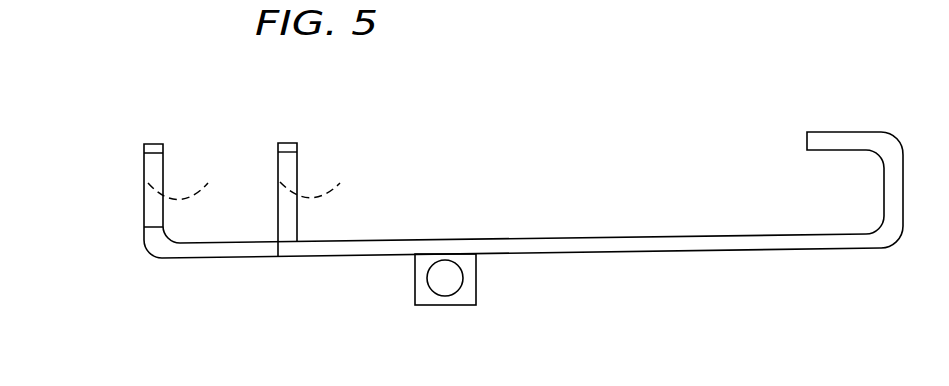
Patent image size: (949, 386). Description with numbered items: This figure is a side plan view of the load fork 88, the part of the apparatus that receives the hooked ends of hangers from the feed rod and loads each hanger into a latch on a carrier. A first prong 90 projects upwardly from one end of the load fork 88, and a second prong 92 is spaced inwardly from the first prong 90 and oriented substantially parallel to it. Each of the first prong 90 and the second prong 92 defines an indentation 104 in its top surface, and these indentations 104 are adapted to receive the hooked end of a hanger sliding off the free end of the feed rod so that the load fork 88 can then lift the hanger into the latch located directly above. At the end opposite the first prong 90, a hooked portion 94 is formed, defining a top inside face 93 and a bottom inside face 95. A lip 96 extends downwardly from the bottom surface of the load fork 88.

The load fork 88 is at (531, 155).
The first prong 90 is at (152, 144).
The second prong 92 is at (294, 143).
The top inside face 93 is at (835, 150).
The hooked portion 94 is at (806, 141).
The bottom inside face 95 is at (782, 234).
The lip 96 is at (415, 281).
The indentation 104 is at (257, 178).